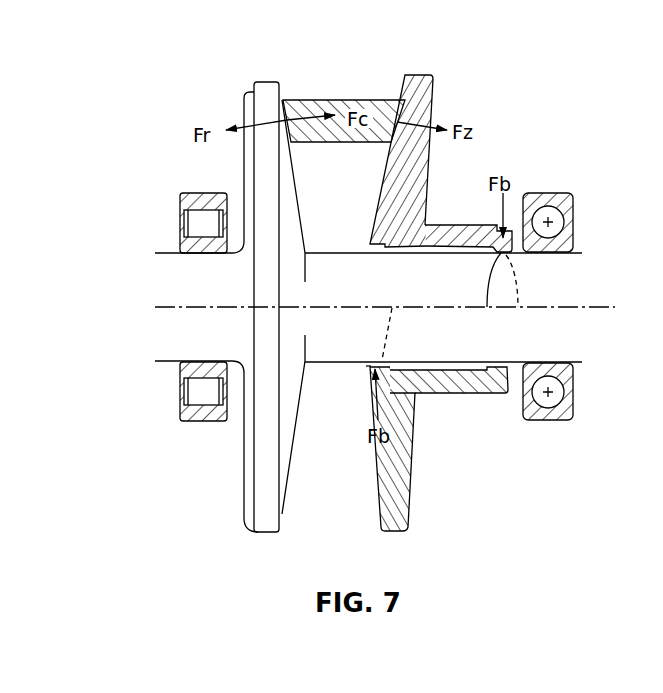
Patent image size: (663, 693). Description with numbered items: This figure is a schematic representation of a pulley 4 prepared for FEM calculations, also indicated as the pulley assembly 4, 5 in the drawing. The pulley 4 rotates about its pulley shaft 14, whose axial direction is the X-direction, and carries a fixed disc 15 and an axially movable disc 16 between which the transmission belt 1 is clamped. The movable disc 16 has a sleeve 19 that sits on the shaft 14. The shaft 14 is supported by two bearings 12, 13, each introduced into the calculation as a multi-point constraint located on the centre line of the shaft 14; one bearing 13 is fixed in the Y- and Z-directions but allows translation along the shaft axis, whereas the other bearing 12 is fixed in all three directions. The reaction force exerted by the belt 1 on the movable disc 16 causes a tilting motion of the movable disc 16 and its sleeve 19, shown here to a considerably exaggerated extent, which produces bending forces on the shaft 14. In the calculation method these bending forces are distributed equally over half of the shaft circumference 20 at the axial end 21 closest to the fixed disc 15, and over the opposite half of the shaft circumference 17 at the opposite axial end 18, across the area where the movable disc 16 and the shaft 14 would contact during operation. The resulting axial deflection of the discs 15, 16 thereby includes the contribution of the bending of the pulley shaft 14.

The pulley 4 is at (157, 107).
The bearing arrangement 5 is at (359, 280).
The belt 1 is at (292, 100).
The bearing 12 is at (570, 417).
The bearing 13 is at (180, 195).
The pulley shaft 14 is at (162, 254).
The fixed disc 15 is at (257, 98).
The movable disc 16 is at (418, 78).
The half of the shaft circumference 17 is at (487, 293).
The axial end 18 is at (507, 394).
The sleeve 19 is at (462, 235).
The half of the shaft circumference 20 is at (370, 360).
The axial end 21 is at (363, 367).